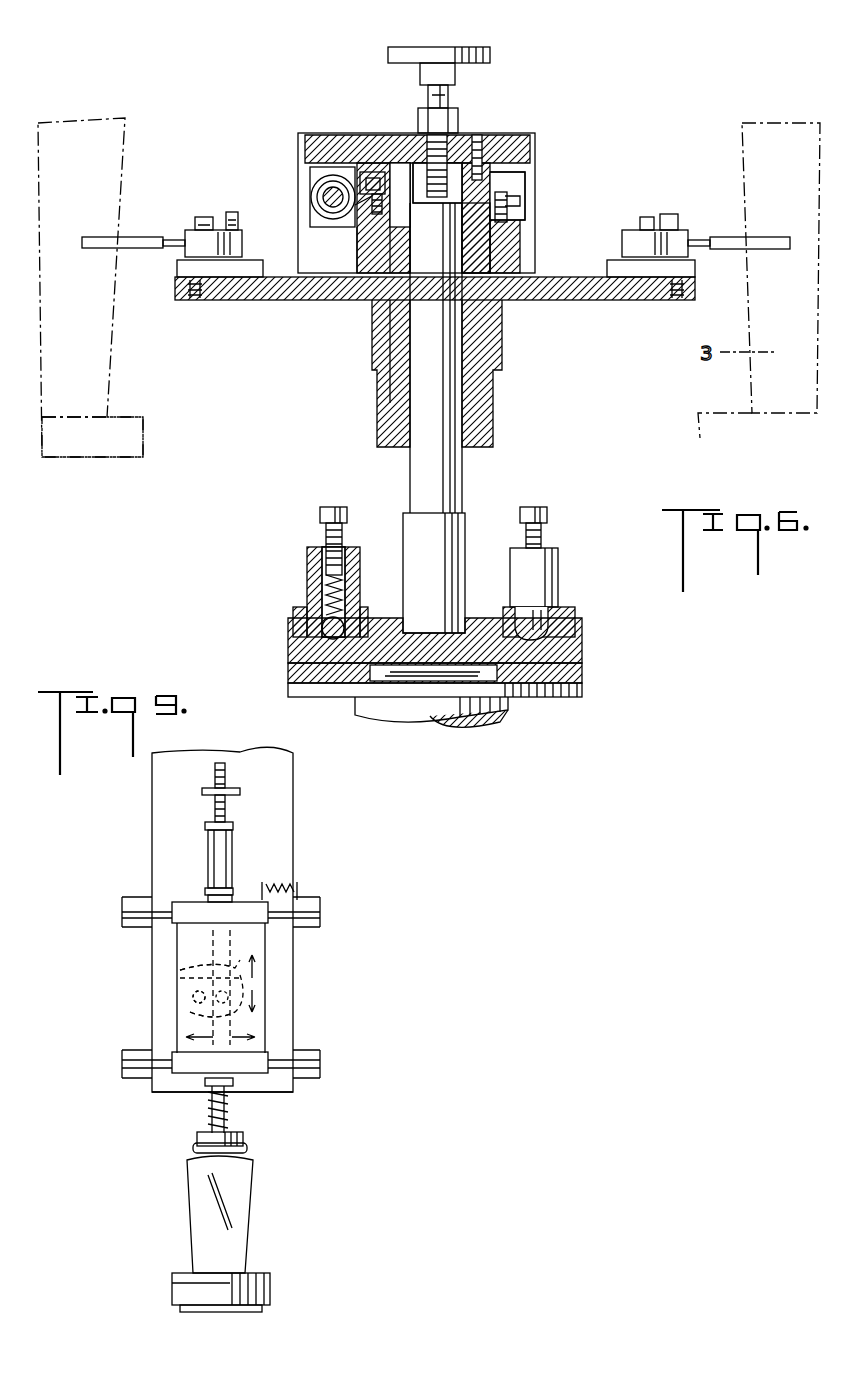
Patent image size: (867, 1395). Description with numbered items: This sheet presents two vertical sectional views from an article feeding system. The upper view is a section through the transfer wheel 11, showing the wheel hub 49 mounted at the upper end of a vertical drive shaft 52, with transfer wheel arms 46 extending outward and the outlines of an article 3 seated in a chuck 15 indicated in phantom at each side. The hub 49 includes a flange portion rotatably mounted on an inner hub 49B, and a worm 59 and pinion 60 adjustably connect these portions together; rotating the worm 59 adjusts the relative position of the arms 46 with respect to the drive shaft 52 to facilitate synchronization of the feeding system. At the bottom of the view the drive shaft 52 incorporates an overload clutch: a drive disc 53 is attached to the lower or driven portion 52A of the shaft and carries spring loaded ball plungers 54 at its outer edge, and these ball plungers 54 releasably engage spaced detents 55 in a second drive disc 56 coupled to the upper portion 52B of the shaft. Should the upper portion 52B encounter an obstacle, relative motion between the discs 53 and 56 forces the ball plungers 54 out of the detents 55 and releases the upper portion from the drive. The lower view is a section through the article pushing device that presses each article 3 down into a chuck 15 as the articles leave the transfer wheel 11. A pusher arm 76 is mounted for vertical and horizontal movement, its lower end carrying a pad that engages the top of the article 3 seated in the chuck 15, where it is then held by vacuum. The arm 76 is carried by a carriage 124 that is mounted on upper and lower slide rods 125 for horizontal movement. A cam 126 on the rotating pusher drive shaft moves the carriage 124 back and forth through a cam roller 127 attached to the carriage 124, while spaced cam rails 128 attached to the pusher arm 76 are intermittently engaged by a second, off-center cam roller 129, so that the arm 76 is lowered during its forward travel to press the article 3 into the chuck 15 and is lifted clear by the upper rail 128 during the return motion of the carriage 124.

In FIG. 6, the article 3 is at (108, 353).
In FIG. 9, the article 3 is at (243, 1192).
In FIG. 6, the transfer wheel 11 is at (316, 476).
In FIG. 6, the chuck 15 is at (145, 430).
In FIG. 9, the chuck 15 is at (178, 1285).
In FIG. 6, the transfer wheel arm 46 is at (727, 241).
In FIG. 6, the wheel hub 49 is at (545, 110).
In FIG. 6, the inner hub 49B is at (483, 229).
In FIG. 6, the drive shaft 52 is at (394, 504).
In FIG. 6, the lower or driven portion of the shaft 52A is at (510, 711).
In FIG. 6, the upper portion of the shaft 52B is at (452, 464).
In FIG. 6, the drive disc 53 is at (582, 682).
In FIG. 6, the spring loaded ball plunger 54 is at (560, 553).
In FIG. 6, the detent 55 is at (582, 648).
In FIG. 6, the drive disc 56 is at (582, 668).
In FIG. 6, the worm 59 is at (327, 190).
In FIG. 6, the pinion 60 is at (360, 210).
In FIG. 9, the pusher arm 76 is at (230, 1112).
In FIG. 9, the carriage 124 is at (255, 1027).
In FIG. 9, the slide rods 125 is at (280, 908).
In FIG. 9, the cam 126 is at (195, 1018).
In FIG. 9, the cam roller 127 is at (192, 996).
In FIG. 9, the cam rails 128 is at (180, 970).
In FIG. 9, the second cam roller 129 is at (250, 938).